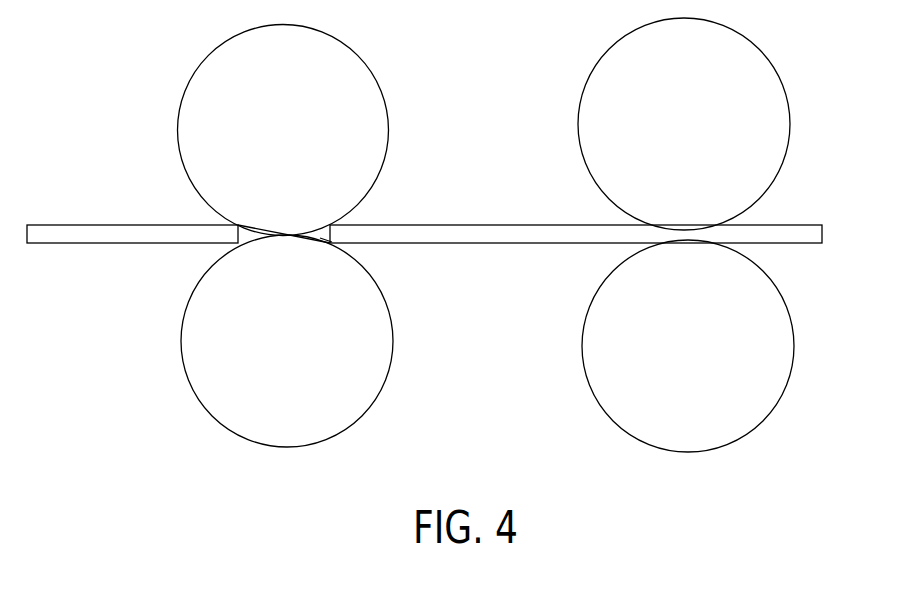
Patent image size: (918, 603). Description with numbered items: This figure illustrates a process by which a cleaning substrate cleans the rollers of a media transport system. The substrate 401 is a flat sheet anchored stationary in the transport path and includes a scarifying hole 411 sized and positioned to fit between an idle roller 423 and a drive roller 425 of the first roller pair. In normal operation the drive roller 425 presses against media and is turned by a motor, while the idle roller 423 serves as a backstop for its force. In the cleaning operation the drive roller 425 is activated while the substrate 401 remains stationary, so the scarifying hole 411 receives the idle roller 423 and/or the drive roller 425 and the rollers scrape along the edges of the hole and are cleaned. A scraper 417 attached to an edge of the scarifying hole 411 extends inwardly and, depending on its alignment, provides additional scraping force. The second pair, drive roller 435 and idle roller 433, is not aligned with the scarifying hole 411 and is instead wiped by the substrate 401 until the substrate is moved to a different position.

The substrate 401 is at (58, 229).
The scarifying hole 411 is at (234, 222).
The scraper 417 is at (322, 236).
The idle roller 423 is at (383, 127).
The drive roller 425 is at (378, 366).
The idle roller 433 is at (777, 110).
The drive roller 435 is at (780, 357).